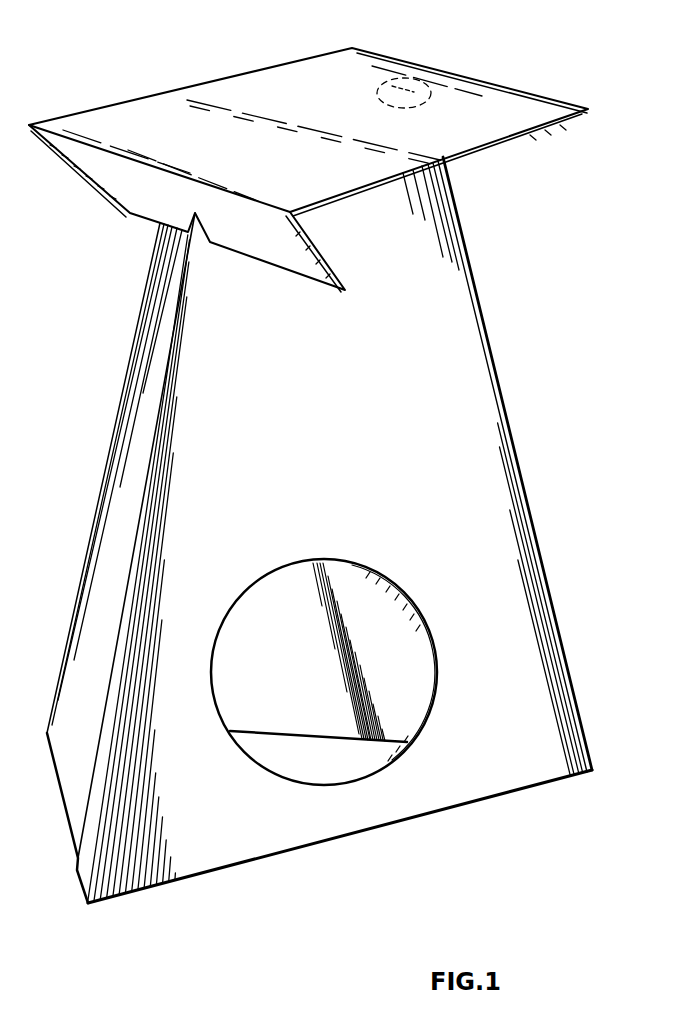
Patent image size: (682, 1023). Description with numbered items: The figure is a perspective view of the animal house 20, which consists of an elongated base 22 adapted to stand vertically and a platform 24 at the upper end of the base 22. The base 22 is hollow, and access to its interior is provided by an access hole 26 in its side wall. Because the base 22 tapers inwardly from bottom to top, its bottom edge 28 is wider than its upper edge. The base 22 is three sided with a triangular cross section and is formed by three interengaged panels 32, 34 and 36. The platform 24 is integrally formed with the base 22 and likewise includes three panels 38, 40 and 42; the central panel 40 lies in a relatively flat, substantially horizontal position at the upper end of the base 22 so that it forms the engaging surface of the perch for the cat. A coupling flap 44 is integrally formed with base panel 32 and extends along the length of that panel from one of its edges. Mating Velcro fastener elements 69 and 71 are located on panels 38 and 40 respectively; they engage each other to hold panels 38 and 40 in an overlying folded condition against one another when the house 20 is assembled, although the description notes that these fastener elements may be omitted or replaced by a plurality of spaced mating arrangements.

The house 20 is at (550, 265).
The base 22 is at (567, 330).
The platform 24 is at (580, 163).
The access hole 26 is at (237, 608).
The bottom edge 28 is at (212, 868).
The panel 32 is at (472, 575).
The panel 34 is at (127, 463).
The panel 36 is at (270, 680).
The panel 38 is at (483, 158).
The central panel 40 is at (170, 127).
The panel 42 is at (160, 193).
The coupling flap 44 is at (120, 647).
The Velcro fastener element 69 is at (412, 103).
The Velcro fastener element 71 is at (404, 92).